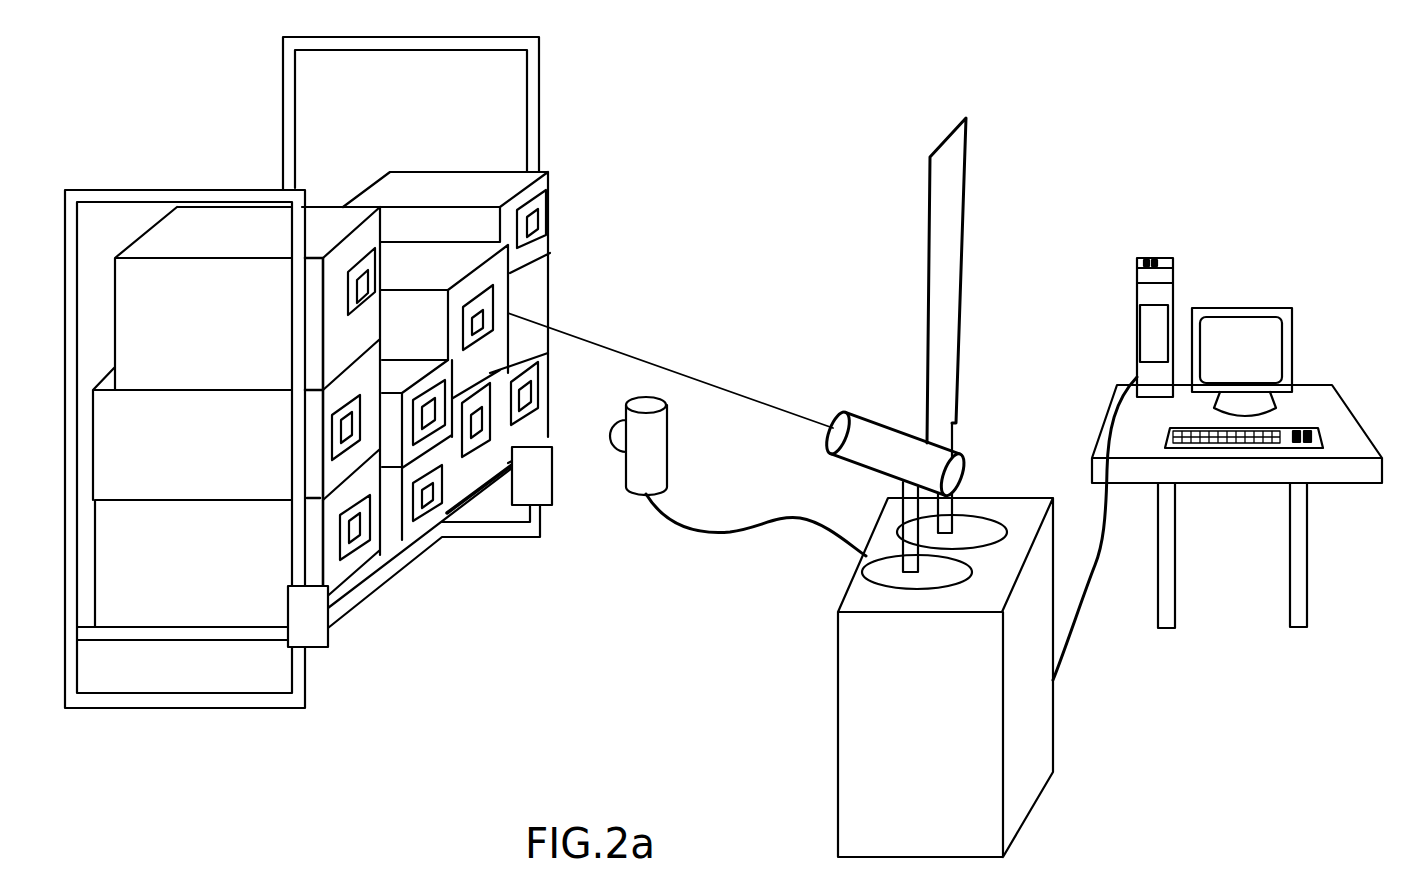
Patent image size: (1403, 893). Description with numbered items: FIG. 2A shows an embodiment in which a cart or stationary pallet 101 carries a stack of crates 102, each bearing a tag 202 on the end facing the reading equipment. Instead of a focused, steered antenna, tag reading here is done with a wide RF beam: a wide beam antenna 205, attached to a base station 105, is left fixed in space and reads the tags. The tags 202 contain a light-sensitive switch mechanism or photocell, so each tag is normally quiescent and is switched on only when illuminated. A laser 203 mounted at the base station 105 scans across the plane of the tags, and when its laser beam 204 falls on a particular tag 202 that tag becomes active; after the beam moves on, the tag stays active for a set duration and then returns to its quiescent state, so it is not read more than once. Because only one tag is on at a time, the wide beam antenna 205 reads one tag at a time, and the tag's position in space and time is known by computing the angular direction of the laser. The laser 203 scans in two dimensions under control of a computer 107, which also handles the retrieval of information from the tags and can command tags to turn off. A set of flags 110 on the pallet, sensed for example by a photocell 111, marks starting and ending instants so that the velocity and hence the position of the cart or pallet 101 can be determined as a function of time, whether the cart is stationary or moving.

The stationary pallet 101 is at (533, 83).
The crates 102 is at (538, 290).
The tags 202 is at (552, 190).
The temporal flag 110 is at (328, 632).
The photocell 111 is at (638, 497).
The laser beam 204 is at (777, 412).
The laser 203 is at (863, 465).
The wide beam antenna 205 is at (966, 160).
The base station 105 is at (840, 805).
The computer 107 is at (1162, 258).